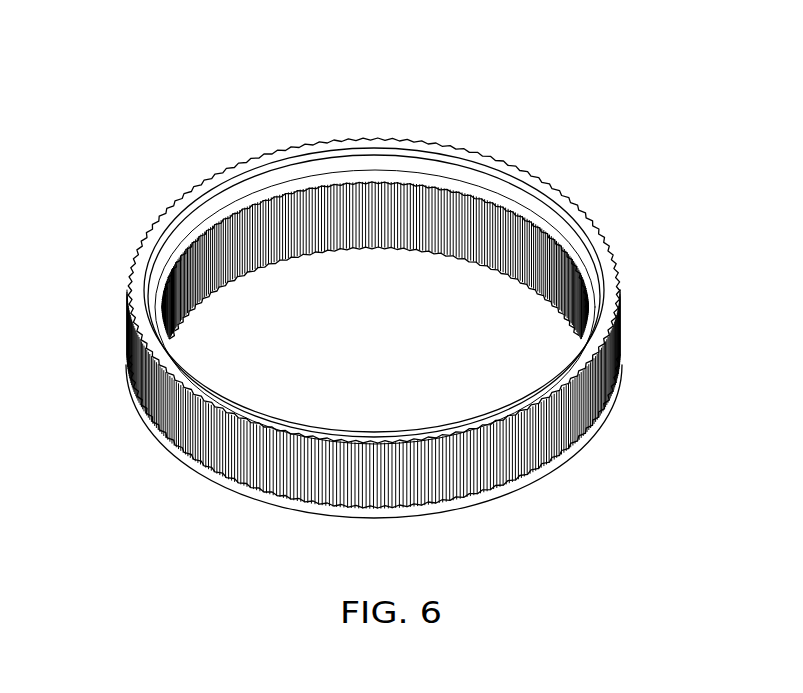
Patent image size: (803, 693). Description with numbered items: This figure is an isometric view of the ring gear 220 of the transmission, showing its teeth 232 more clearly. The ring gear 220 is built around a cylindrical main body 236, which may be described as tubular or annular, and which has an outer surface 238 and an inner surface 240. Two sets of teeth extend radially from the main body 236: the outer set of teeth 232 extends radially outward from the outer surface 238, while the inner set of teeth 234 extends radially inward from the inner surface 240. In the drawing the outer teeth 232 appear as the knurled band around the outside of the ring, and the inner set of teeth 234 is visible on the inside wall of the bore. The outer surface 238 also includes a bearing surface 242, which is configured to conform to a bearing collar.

The ring gear 220 is at (156, 106).
The teeth 232 is at (598, 366).
The inner set of teeth 234 is at (499, 228).
The cylindrical main body 236 is at (576, 227).
The outer surface 238 is at (523, 478).
The inner surface 240 is at (427, 188).
The bearing surface 242 is at (452, 511).